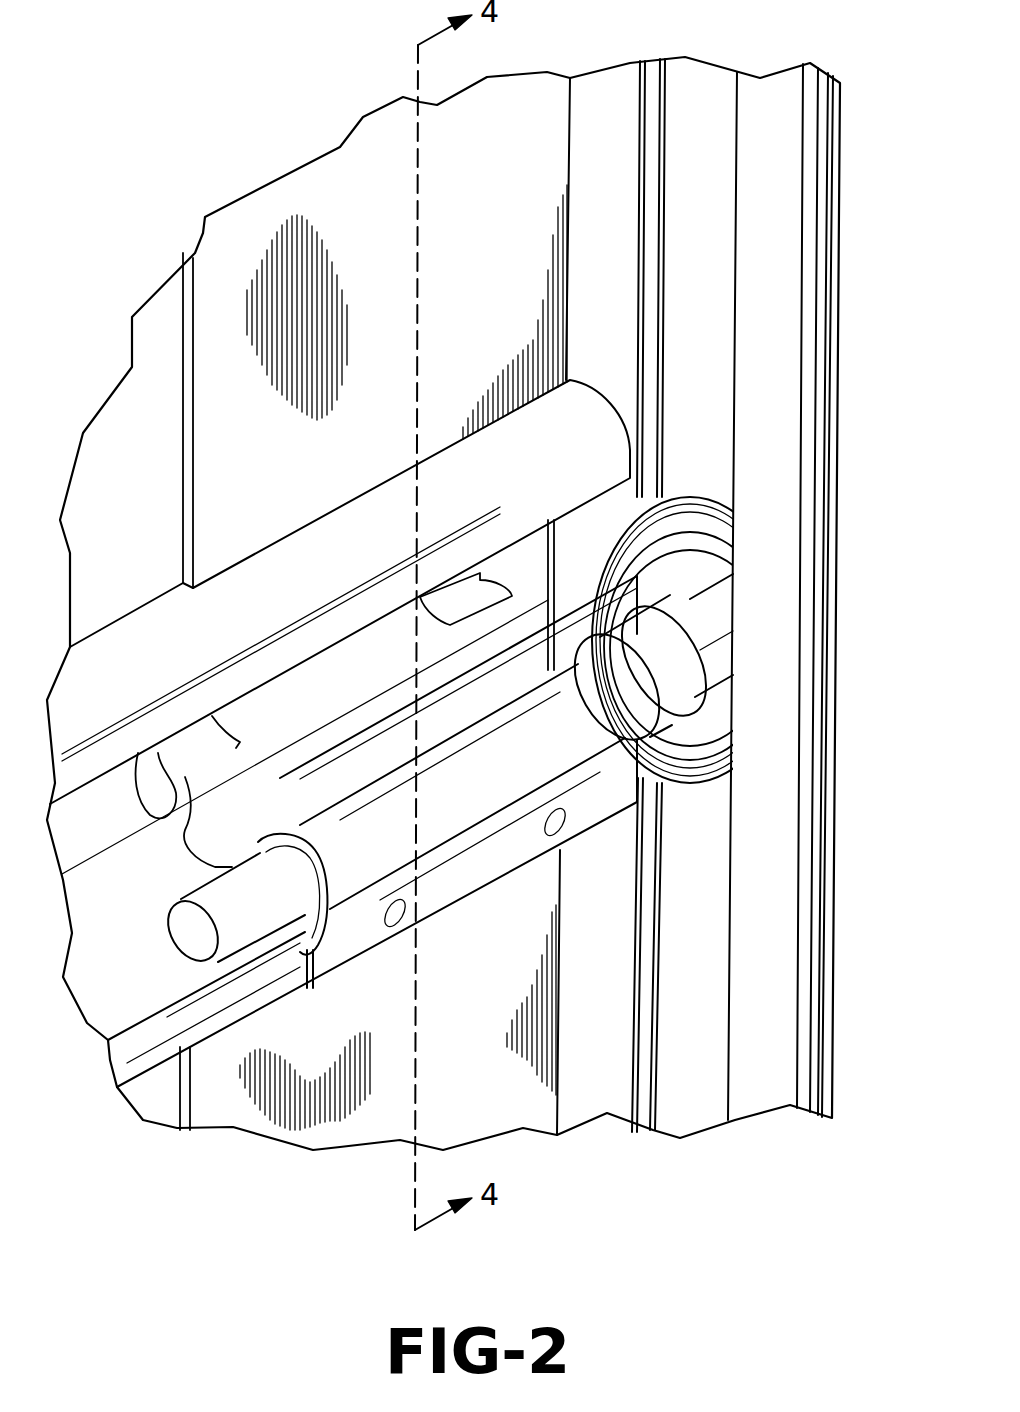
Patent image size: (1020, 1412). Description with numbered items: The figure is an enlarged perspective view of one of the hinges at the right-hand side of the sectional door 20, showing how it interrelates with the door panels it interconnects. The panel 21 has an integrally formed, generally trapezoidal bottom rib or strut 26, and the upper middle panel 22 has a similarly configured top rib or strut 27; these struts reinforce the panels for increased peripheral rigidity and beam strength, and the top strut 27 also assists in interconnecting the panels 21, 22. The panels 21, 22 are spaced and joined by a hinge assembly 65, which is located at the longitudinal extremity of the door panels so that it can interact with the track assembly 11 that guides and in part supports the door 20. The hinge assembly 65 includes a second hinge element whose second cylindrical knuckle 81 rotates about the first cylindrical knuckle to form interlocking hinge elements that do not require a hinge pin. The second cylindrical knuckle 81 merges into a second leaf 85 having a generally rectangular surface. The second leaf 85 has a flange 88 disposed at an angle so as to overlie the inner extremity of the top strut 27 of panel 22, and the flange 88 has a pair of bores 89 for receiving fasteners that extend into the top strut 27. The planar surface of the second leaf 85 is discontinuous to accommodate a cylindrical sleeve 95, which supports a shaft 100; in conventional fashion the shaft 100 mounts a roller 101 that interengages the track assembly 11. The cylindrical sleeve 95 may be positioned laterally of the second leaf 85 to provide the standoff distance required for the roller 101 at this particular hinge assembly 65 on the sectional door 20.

The track assembly 11 is at (845, 1067).
The sectional door 20 is at (572, 165).
The panel 21 is at (346, 212).
The panel 22 is at (238, 1105).
The bottom rib or strut 26 is at (592, 425).
The top rib or strut 27 is at (138, 1060).
The hinge assembly 65 is at (132, 976).
The second cylindrical knuckle 81 is at (248, 757).
The second leaf 85 is at (535, 672).
The flange 88 is at (620, 783).
The bores 89 is at (562, 830).
The cylindrical sleeve 95 is at (590, 695).
The shaft 100 is at (190, 935).
The roller 101 is at (700, 535).